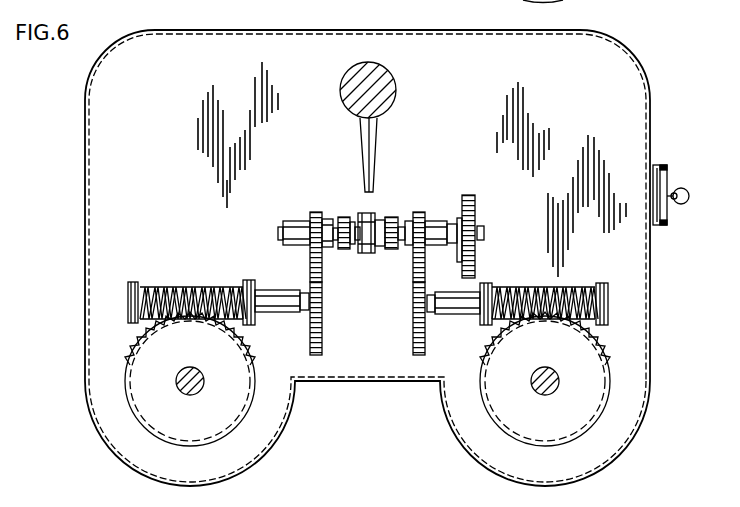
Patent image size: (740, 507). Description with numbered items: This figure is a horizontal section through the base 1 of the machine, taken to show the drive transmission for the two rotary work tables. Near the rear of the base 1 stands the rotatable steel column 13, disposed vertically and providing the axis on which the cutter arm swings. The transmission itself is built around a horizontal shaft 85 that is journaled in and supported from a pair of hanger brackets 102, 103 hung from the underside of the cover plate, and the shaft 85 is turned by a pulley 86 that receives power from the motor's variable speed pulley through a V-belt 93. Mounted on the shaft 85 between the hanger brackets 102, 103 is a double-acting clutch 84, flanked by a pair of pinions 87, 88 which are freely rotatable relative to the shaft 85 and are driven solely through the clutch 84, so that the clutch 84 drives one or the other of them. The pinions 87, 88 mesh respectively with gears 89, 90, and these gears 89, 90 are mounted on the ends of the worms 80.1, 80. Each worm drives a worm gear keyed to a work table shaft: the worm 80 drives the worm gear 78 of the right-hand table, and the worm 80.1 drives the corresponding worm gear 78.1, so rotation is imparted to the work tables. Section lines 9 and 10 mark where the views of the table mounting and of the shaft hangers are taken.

The base 1 is at (657, 305).
The section line 9— 9 is at (522, 15).
The section line 10— 10 is at (239, 260).
The column 13 is at (393, 96).
The worm gear 78 is at (604, 355).
The worm gear 78.1 is at (247, 352).
The worm 80 is at (571, 289).
The worm 80.1 is at (168, 288).
The double-acting clutch 84 is at (372, 214).
The shaft 85 is at (485, 233).
The pulley 86 is at (463, 213).
The pinion 87 is at (319, 207).
The pinion 88 is at (419, 212).
The gear 89 is at (323, 272).
The gear 90 is at (413, 272).
The V-belt 93 is at (470, 195).
The hanger bracket 102 is at (300, 221).
The hanger bracket 103 is at (438, 221).